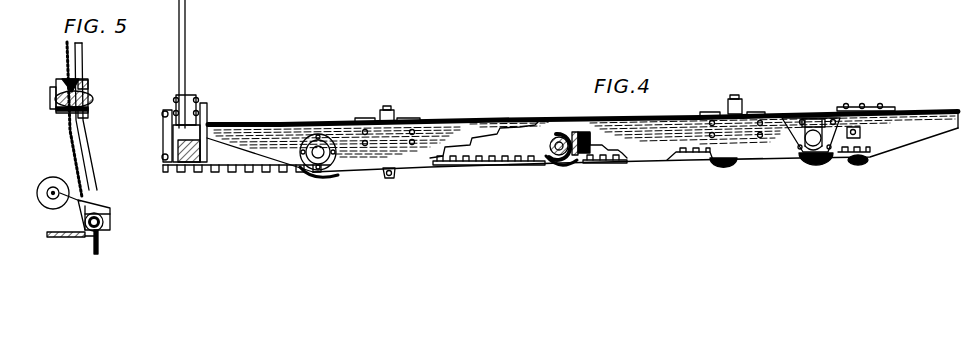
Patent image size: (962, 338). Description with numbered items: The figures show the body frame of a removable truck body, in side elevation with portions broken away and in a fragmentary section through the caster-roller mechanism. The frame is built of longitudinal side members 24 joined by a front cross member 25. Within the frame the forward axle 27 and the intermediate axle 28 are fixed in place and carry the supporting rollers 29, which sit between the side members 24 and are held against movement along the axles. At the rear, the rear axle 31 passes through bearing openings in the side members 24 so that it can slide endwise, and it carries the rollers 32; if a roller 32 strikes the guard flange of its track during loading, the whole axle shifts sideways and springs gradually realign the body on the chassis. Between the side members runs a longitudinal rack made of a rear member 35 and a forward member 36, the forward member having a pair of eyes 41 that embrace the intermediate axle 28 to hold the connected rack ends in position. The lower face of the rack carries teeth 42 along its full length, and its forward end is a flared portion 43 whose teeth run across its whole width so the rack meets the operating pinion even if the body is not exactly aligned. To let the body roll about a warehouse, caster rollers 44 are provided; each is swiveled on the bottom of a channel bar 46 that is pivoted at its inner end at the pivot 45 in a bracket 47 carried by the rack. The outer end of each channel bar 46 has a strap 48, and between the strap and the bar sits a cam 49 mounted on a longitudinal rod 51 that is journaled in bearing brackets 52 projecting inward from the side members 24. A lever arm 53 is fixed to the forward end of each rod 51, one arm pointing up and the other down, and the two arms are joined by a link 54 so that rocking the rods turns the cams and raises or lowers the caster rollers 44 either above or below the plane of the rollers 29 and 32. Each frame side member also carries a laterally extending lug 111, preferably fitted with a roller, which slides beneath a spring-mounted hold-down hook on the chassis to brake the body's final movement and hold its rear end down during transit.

In FIG. 5, the side members 24 is at (49, 232).
In FIG. 4, the side members 24 is at (655, 150).
In FIG. 4, the front cross member 25 is at (208, 118).
In FIG. 4, the forward axle 27 is at (582, 141).
In FIG. 4, the intermediate axle 28 is at (566, 136).
In FIG. 4, the supporting rollers 29 is at (312, 174).
In FIG. 4, the rear axle 31 is at (806, 139).
In FIG. 4, the rollers 32 is at (810, 164).
In FIG. 4, the rear member 35 is at (698, 162).
In FIG. 5, the forward member 36 is at (54, 100).
In FIG. 4, the forward member 36 is at (535, 126).
In FIG. 4, the eyes 41 is at (556, 160).
In FIG. 5, the teeth 42 is at (58, 108).
In FIG. 4, the teeth 42 is at (508, 165).
In FIG. 4, the flared portion 43 is at (193, 168).
In FIG. 5, the caster rollers 44 is at (40, 188).
In FIG. 4, the caster rollers 44 is at (392, 177).
In FIG. 5, the pivot 45 is at (80, 82).
In FIG. 5, the channel bar 46 is at (73, 58).
In FIG. 5, the bracket 47 is at (90, 98).
In FIG. 5, the strap 48 is at (97, 204).
In FIG. 4, the strap 48 is at (389, 110).
In FIG. 5, the cam 49 is at (103, 227).
In FIG. 4, the cam 49 is at (383, 108).
In FIG. 5, the rod 51 is at (80, 238).
In FIG. 5, the bearing brackets 52 is at (110, 213).
In FIG. 4, the bearing brackets 52 is at (362, 118).
In FIG. 4, the lever arm 53 is at (176, 150).
In FIG. 4, the link 54 is at (176, 130).
In FIG. 4, the lug 111 is at (866, 162).